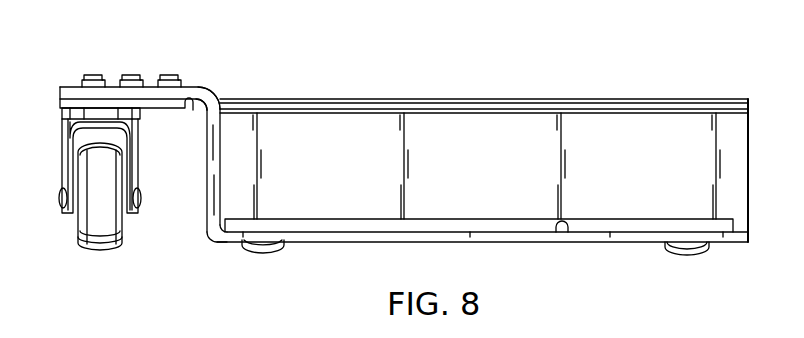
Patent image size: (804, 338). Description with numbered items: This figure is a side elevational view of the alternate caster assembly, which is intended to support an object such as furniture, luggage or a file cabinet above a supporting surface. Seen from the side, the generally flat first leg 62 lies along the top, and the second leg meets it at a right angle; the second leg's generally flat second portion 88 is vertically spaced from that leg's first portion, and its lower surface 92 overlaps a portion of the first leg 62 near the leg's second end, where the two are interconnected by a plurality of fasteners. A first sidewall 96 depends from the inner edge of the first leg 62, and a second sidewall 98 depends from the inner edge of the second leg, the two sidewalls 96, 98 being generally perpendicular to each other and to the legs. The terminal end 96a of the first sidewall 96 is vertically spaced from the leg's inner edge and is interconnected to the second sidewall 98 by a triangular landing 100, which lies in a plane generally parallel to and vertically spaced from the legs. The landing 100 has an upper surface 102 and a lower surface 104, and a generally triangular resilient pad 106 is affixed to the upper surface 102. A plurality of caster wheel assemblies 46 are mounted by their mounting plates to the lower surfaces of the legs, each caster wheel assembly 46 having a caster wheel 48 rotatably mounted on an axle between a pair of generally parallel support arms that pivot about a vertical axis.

The caster wheel assembly 46 is at (59, 156).
The caster wheel 48 is at (100, 250).
The first leg 62 is at (62, 100).
The second portion of second leg 88 is at (68, 85).
The lower surface of second portion 92 is at (192, 106).
The first sidewall 96 is at (209, 165).
The terminal end of first sidewall 96a is at (213, 243).
The second sidewall 98 is at (494, 180).
The triangular landing 100 is at (358, 246).
The upper surface of landing 102 is at (566, 236).
The lower surface of landing 104 is at (494, 243).
The resilient pad 106 is at (615, 221).